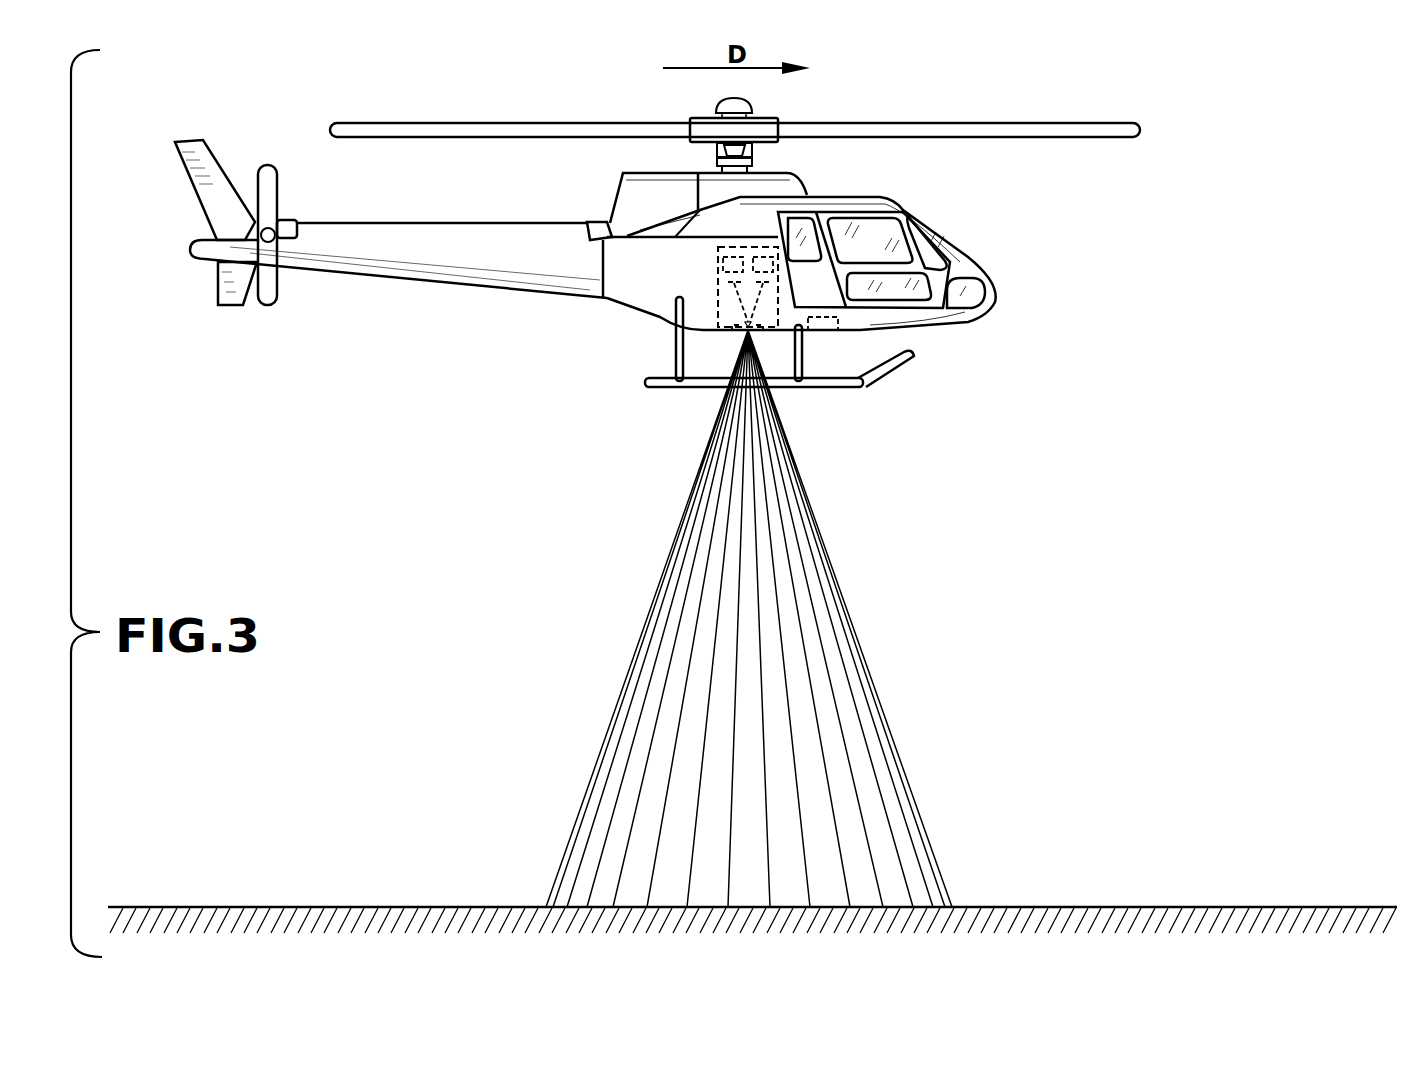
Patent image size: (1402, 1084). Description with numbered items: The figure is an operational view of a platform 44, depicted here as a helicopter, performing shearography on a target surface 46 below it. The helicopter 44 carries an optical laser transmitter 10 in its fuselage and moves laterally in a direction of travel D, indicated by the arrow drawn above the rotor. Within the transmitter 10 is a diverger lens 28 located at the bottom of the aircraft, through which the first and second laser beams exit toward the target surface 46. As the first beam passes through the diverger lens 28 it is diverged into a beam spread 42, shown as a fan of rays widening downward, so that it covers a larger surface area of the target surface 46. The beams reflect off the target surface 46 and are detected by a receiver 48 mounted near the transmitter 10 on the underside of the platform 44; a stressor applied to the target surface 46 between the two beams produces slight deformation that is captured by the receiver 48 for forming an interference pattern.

The optical laser transmitter 10 is at (695, 273).
The diverger lens 28 is at (740, 332).
The beam spread 42 is at (628, 613).
The platform 44 is at (950, 222).
The target surface 46 is at (1263, 892).
The receiver 48 is at (823, 333).